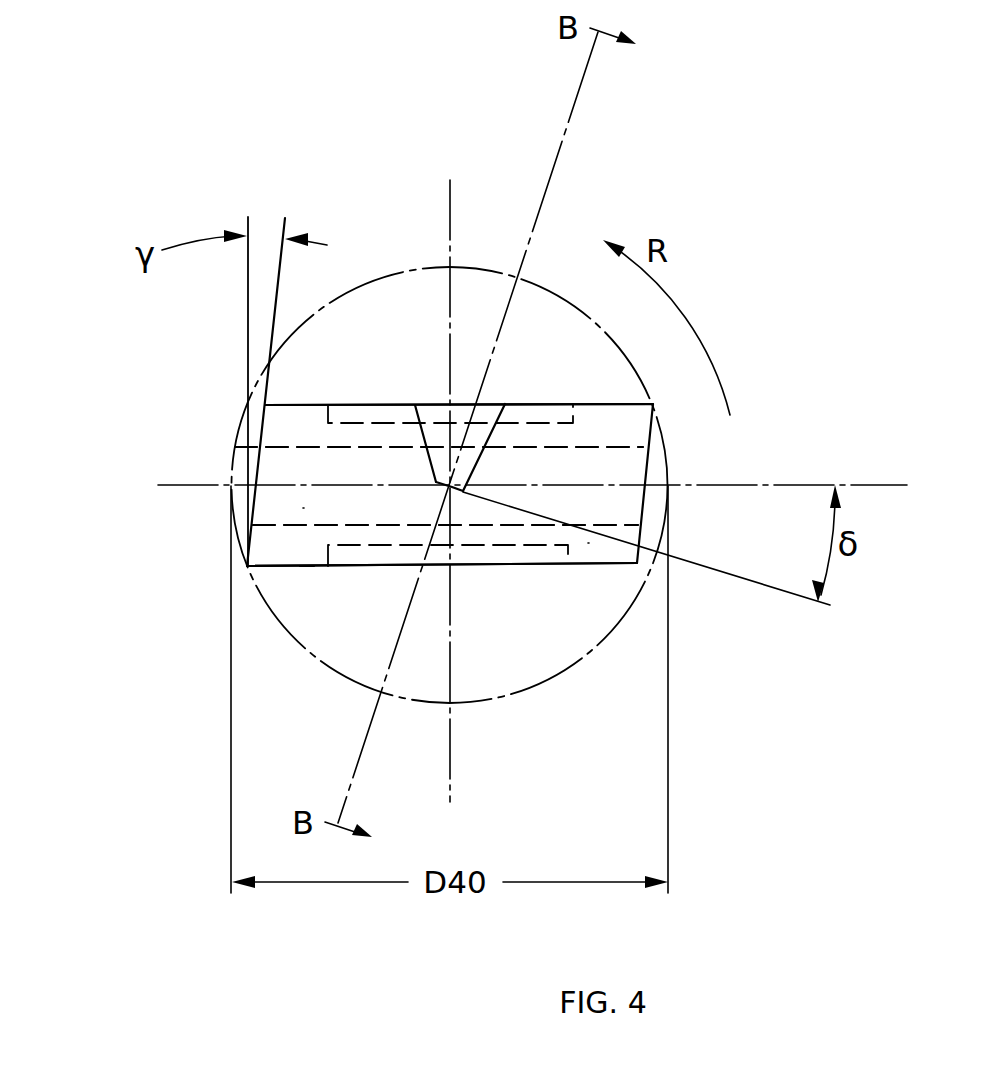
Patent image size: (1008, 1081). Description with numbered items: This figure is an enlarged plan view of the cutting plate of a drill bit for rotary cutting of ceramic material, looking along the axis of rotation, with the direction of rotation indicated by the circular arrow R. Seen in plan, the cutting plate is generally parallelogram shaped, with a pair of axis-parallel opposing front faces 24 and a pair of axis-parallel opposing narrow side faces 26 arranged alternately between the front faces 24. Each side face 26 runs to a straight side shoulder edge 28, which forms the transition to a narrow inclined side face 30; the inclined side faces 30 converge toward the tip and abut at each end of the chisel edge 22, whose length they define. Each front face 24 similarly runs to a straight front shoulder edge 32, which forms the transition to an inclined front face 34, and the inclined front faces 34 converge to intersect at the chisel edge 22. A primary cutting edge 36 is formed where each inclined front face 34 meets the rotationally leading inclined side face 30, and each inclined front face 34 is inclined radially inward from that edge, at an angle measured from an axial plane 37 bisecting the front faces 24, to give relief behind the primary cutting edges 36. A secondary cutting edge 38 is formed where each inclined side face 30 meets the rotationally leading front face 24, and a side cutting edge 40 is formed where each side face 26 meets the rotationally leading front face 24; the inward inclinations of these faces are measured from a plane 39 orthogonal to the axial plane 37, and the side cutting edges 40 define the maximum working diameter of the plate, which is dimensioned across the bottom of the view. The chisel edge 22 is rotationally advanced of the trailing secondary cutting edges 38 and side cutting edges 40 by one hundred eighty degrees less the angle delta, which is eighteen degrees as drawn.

The chisel edge 22 is at (435, 483).
The front faces 24 is at (315, 405).
The side faces 26 is at (263, 450).
The side shoulder edge 28 is at (439, 486).
The inclined side faces 30 is at (303, 508).
The front shoulder edge 32 is at (505, 404).
The inclined front faces 34 is at (435, 405).
The primary cutting edge 36 is at (412, 433).
The axial plane 37 is at (878, 482).
The secondary cutting edge 38 is at (307, 573).
The plane 39 is at (247, 303).
The side cutting edge 40 is at (247, 567).